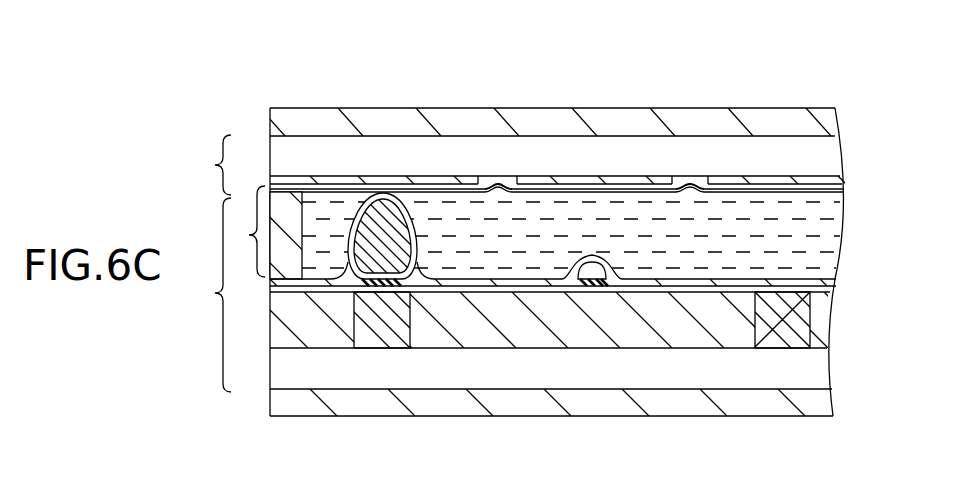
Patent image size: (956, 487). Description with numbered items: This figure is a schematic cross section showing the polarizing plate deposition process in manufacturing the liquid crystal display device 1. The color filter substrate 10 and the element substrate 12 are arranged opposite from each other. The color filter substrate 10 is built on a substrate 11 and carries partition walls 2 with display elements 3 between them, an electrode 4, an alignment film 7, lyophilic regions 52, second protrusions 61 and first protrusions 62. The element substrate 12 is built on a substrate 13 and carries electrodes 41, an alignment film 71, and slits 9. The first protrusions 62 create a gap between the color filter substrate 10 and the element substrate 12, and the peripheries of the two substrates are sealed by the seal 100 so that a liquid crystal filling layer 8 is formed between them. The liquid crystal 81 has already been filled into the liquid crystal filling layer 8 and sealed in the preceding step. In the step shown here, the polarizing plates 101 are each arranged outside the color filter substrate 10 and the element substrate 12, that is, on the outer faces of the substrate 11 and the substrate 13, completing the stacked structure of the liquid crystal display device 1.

The liquid crystal display device 1 is at (841, 82).
The partition walls 2 is at (365, 328).
The display elements 3 is at (830, 325).
The electrode 4 is at (833, 290).
The alignment film 7 is at (836, 279).
The liquid crystal filling layer 8 is at (247, 231).
The slits 9 is at (500, 184).
The color filter substrate 10 is at (207, 295).
The substrate 11 is at (830, 363).
The element substrate 12 is at (207, 165).
The substrate 13 is at (836, 160).
The electrodes 41 is at (839, 184).
The lyophilic regions 52 is at (407, 288).
The second protrusions 61 is at (594, 270).
The first protrusions 62 is at (383, 213).
The alignment film 71 is at (841, 191).
The liquid crystal 81 is at (836, 232).
The seal 100 is at (291, 210).
The polarizing plates 101 is at (830, 118).